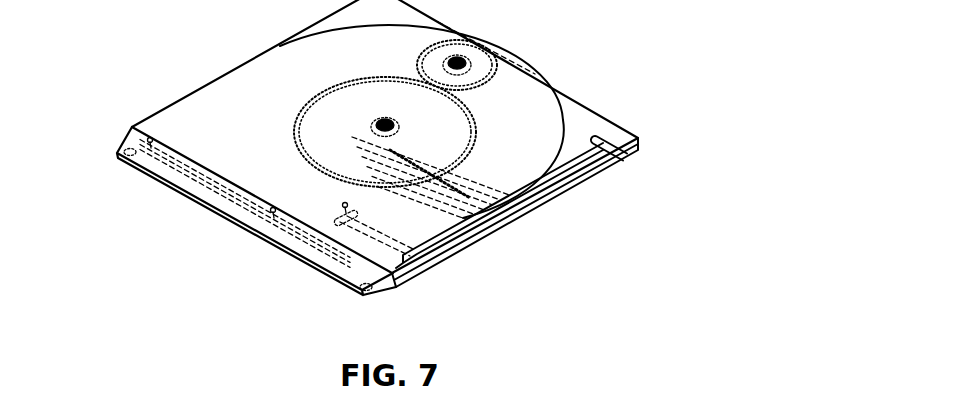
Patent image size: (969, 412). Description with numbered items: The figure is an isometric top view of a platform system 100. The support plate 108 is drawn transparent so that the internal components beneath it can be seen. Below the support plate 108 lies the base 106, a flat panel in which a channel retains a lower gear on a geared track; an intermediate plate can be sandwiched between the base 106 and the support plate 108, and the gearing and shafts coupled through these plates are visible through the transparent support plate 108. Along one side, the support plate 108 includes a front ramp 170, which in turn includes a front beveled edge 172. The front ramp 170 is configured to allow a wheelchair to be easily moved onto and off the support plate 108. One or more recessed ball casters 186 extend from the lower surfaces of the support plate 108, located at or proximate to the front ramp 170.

The platform system 100 is at (200, 40).
The base 106 is at (632, 151).
The support plate 108 is at (528, 113).
The front ramp 170 is at (293, 253).
The front beveled edge 172 is at (176, 177).
The recessed ball casters 186 is at (132, 160).